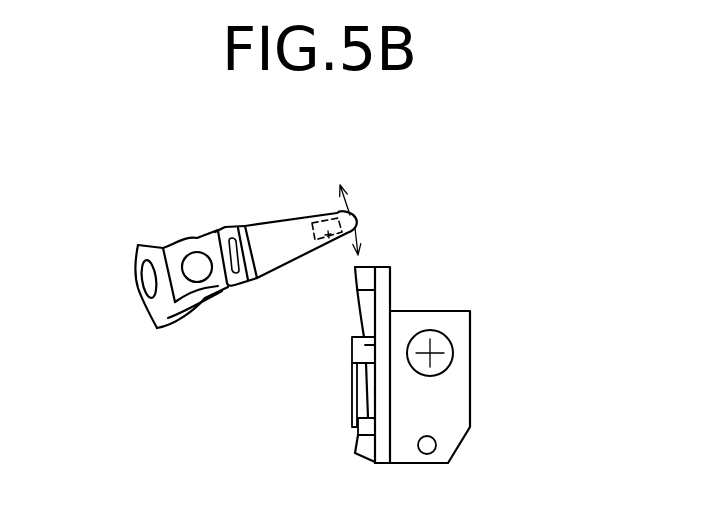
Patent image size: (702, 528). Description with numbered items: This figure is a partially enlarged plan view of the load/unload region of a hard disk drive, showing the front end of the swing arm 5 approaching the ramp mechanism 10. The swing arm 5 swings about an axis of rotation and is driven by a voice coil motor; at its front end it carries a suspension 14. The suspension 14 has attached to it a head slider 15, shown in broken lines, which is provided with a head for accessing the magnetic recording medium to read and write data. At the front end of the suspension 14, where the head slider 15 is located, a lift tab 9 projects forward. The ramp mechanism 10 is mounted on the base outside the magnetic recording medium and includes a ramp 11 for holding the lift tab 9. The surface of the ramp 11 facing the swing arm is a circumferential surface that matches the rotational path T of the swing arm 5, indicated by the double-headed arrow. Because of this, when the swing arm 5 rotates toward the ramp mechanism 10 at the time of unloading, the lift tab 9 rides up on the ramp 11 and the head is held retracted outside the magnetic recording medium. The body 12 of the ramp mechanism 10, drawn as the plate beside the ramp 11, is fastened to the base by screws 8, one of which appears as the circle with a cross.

The swing arm 5 is at (202, 235).
The suspension 14 is at (283, 233).
The head slider 15 is at (318, 240).
The lift tab 9 is at (358, 221).
The rotational path T is at (350, 213).
The ramp mechanism 10 is at (477, 295).
The ramp 11 is at (363, 277).
The body 12 is at (465, 373).
The screws 8 is at (421, 333).